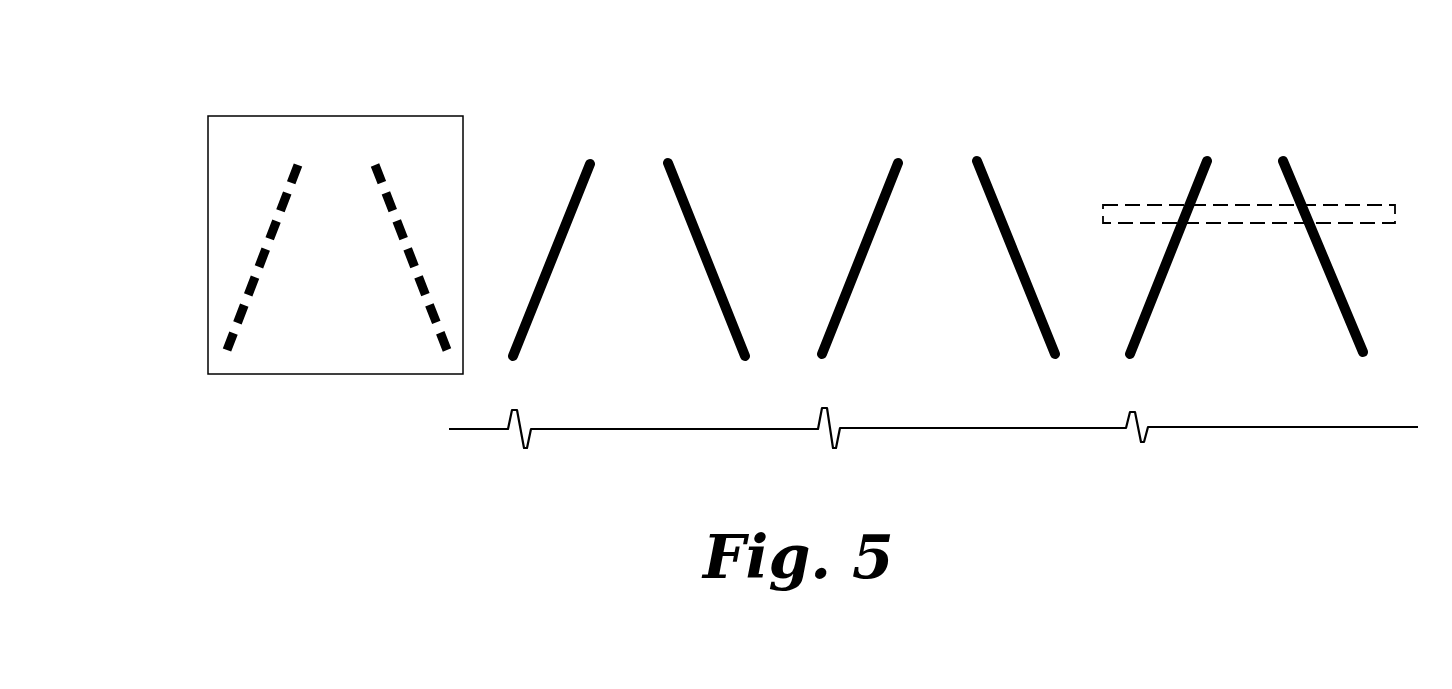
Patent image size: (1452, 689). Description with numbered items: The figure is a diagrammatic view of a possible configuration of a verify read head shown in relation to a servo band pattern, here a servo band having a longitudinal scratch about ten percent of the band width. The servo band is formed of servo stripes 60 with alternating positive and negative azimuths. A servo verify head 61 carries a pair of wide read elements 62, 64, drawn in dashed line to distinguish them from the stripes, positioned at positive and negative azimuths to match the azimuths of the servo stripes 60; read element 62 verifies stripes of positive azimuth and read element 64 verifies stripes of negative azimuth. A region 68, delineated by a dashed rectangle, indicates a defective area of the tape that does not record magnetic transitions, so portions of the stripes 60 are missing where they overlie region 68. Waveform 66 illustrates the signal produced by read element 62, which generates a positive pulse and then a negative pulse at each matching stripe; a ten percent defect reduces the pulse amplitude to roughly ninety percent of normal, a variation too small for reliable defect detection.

The servo stripes 60 is at (577, 185).
The servo verify head 61 is at (235, 113).
The read element 62 is at (283, 193).
The read element 64 is at (375, 168).
The waveform 66 is at (478, 430).
The region 68 is at (1338, 206).